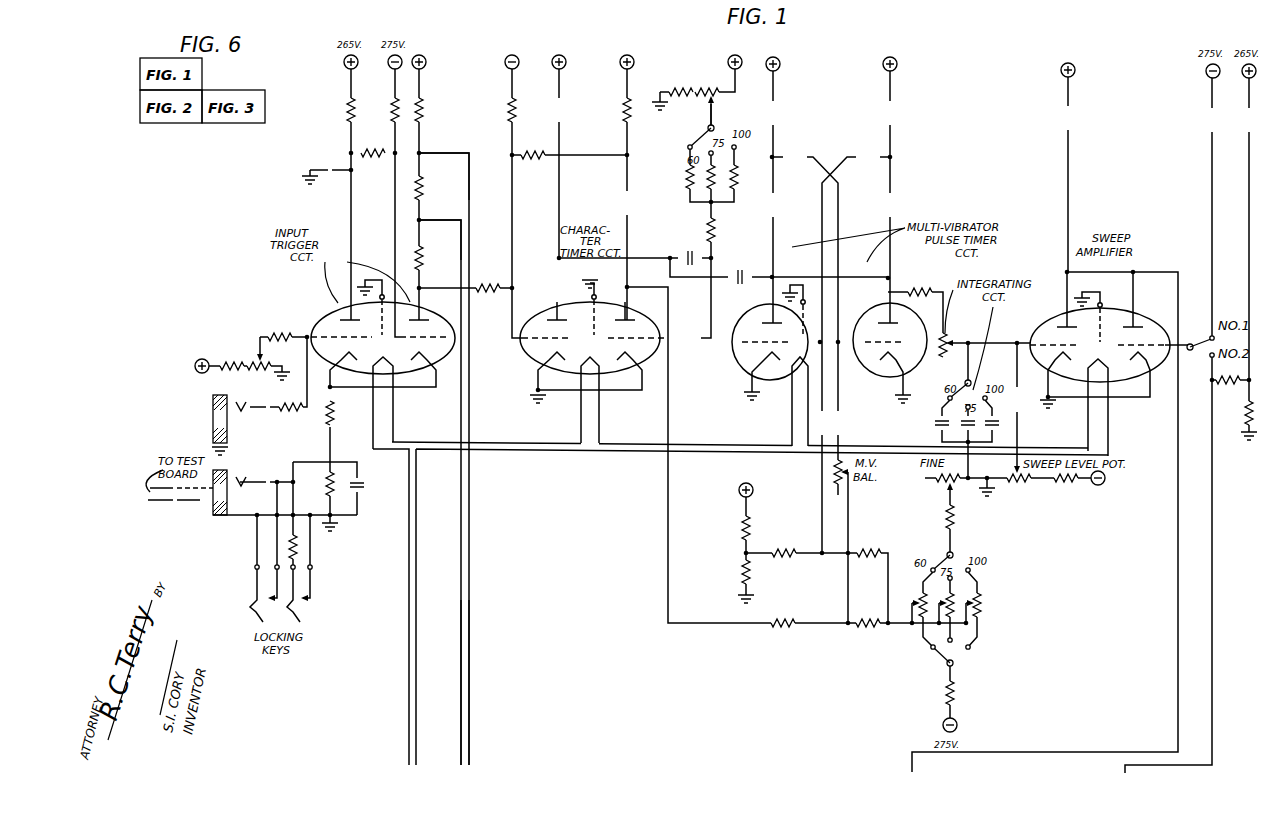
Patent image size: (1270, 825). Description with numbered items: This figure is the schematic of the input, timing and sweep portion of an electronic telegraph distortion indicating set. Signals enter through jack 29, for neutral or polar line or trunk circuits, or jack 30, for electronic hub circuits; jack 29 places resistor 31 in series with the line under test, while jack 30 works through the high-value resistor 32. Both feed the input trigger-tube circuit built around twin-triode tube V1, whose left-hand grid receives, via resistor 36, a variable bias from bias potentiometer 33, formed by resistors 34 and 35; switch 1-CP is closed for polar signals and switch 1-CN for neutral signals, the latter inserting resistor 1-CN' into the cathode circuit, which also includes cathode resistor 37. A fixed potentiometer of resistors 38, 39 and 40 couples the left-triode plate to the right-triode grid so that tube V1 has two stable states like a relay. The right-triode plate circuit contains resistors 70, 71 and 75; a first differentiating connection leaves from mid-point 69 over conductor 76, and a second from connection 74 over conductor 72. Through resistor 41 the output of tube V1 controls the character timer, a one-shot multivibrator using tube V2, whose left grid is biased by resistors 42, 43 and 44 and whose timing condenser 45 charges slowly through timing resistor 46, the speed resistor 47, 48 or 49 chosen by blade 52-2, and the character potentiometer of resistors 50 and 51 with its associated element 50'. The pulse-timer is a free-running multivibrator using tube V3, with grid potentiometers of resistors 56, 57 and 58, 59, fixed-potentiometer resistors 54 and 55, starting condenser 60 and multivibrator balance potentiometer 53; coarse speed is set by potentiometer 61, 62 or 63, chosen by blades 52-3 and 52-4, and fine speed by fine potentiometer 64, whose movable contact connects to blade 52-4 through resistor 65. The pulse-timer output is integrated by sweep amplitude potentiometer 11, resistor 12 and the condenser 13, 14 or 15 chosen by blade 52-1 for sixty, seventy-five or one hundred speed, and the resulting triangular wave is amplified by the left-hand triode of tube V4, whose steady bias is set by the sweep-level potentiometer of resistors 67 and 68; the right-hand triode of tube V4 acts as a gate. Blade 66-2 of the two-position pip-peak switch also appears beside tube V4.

The sweep amplitude potentiometer 11 is at (950, 336).
The resistor 12 is at (920, 290).
The condenser 13 is at (960, 425).
The condenser 14 is at (940, 420).
The condenser 15 is at (1000, 424).
The jack 29 is at (220, 516).
The jack 30 is at (213, 398).
The resistor 31 is at (326, 490).
The resistor 32 is at (292, 411).
The bias potentiometer 33 is at (258, 352).
The resistor 34 is at (232, 370).
The resistor 35 is at (270, 364).
The resistor 36 is at (286, 333).
The cathode resistor 37 is at (333, 418).
The resistor 38 is at (346, 113).
The resistor 39 is at (375, 150).
The resistor 40 is at (393, 106).
The resistor 41 is at (489, 284).
The resistor 42 is at (623, 115).
The resistor 43 is at (536, 152).
The resistor 44 is at (508, 110).
The timing condenser 45 is at (688, 252).
The timing resistor 46 is at (715, 234).
The resistor 47 is at (686, 178).
The resistor 48 is at (708, 197).
The resistor 49 is at (735, 198).
The resistor 50 is at (708, 82).
The potentiometer wiper 50' is at (732, 112).
The resistor 51 is at (684, 90).
The speed switch blade 52-1 is at (957, 388).
The speed switch blade 52-2 is at (706, 131).
The speed switch blade 52-3 is at (942, 665).
The speed switch blade 52-4 is at (945, 554).
The multivibrator balance potentiometer 53 is at (849, 462).
The resistor 54 is at (742, 530).
The resistor 55 is at (742, 576).
The resistor 56 is at (780, 549).
The resistor 57 is at (865, 549).
The resistor 58 is at (780, 628).
The resistor 59 is at (865, 628).
The condenser 60 is at (742, 284).
The variable potentiometer 61 is at (918, 600).
The variable potentiometer 62 is at (955, 595).
The variable potentiometer 63 is at (982, 604).
The fine potentiometer 64 is at (945, 487).
The resistor 65 is at (955, 518).
The pip-peak switch blade 66-2 is at (1192, 343).
The resistor 67 is at (1020, 482).
The resistor 68 is at (1068, 482).
The mid-point 69 is at (421, 152).
The resistor 70 is at (422, 108).
The resistor 71 is at (423, 184).
The conductor 72 is at (462, 718).
The connection 74 is at (421, 221).
The resistor 75 is at (423, 262).
The conductor 76 is at (470, 736).
The twin-triode vacuum tube V1 is at (378, 370).
The twin-triode vacuum tube V2 is at (593, 372).
The twin-triode vacuum tube V3 is at (795, 375).
The vacuum tube V4 is at (1102, 375).
The switch 1-CP is at (254, 606).
The switch 1-CN is at (320, 597).
The resistor 1-CN' is at (325, 547).